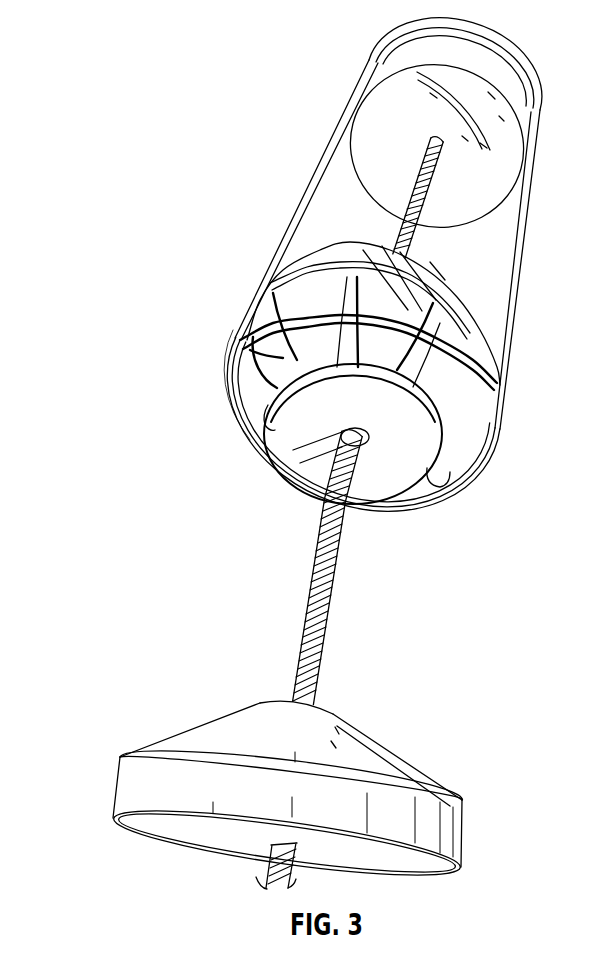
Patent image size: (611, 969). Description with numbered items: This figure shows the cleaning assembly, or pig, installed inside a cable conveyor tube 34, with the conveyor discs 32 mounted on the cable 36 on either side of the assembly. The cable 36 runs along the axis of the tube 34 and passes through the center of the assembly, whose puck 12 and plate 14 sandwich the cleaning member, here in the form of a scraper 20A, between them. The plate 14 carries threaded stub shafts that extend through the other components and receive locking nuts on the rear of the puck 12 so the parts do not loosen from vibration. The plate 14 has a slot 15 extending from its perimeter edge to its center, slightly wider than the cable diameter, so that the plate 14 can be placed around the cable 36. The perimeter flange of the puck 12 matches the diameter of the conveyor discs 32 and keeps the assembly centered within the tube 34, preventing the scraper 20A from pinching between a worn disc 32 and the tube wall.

The puck 12 is at (303, 307).
The plate 14 is at (381, 476).
The slot 15 is at (301, 468).
The scraper 20A is at (252, 356).
The conveyor disc 32 is at (508, 157).
The tube 34 is at (523, 247).
The cable 36 is at (307, 610).